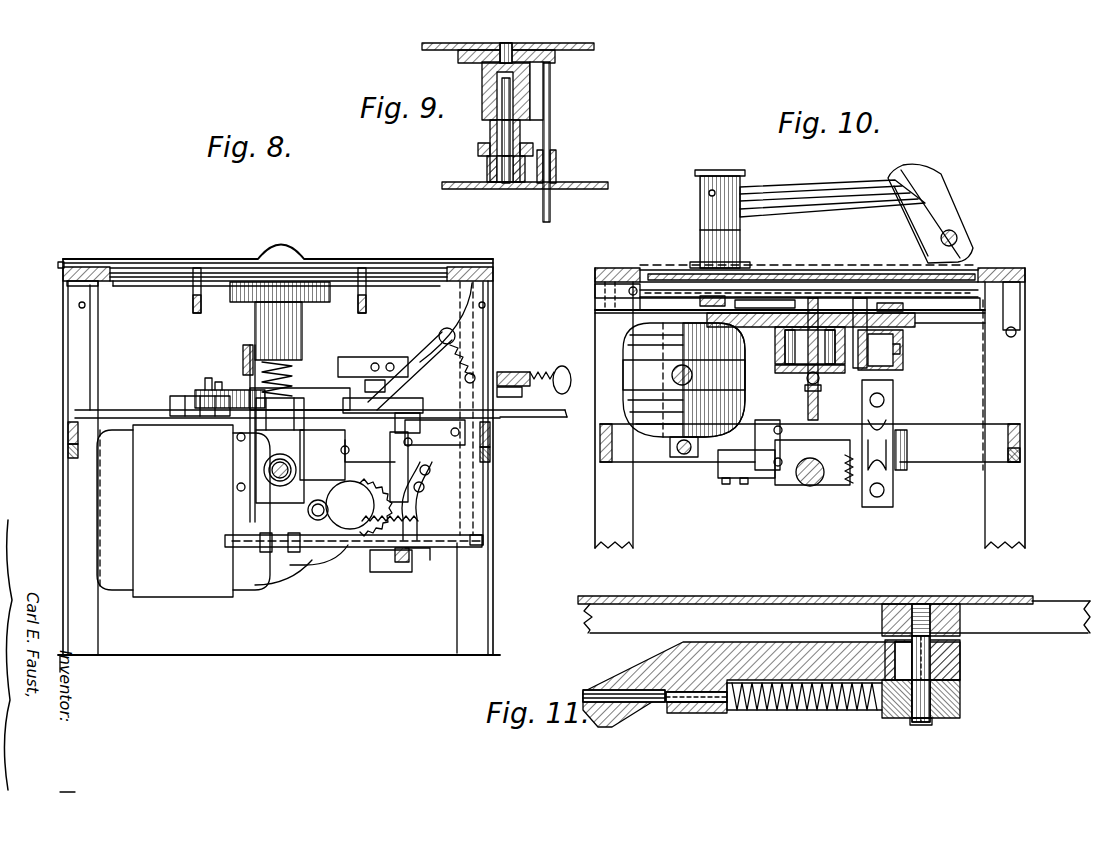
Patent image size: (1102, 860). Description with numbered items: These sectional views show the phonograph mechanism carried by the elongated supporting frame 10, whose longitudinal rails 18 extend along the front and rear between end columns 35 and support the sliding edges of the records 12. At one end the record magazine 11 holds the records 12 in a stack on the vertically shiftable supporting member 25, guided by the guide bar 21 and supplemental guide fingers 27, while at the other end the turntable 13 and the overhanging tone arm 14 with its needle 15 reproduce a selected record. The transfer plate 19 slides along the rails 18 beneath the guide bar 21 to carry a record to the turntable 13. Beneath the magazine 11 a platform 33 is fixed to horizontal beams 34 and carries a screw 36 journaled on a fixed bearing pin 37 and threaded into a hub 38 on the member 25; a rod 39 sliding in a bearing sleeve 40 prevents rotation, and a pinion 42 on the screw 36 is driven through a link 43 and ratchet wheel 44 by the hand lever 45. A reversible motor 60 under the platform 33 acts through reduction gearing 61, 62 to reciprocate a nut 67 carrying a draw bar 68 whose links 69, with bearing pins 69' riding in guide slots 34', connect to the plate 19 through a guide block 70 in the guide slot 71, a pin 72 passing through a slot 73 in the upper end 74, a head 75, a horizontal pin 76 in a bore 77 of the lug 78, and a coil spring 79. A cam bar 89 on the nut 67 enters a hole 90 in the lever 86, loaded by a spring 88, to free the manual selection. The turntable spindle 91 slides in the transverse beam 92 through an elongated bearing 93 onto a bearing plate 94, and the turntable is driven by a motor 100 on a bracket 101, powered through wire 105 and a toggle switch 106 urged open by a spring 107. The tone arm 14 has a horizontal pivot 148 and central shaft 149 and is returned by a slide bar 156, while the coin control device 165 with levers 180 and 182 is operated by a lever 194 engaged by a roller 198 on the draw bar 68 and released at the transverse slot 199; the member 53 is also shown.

In FIG. 8, the supporting frame 10 is at (55, 368).
In FIG. 10, the supporting frame 10 is at (1040, 385).
In FIG. 8, the record magazine 11 is at (397, 258).
In FIG. 8, the records 12 is at (137, 275).
In FIG. 10, the turntable 13 is at (946, 285).
In FIG. 10, the tone arm 14 is at (838, 186).
In FIG. 10, the needle 15 is at (946, 263).
In FIG. 8, the longitudinal rails 18 is at (80, 268).
In FIG. 10, the longitudinal rails 18 is at (620, 268).
In FIG. 11, the longitudinal rails 18 is at (1057, 592).
In FIG. 11, the transfer plate 19 is at (798, 596).
In FIG. 8, the guide bar 21 is at (200, 262).
In FIG. 8, the record-supporting member 25 is at (135, 288).
In FIG. 9, the record-supporting member 25 is at (455, 43).
In FIG. 8, the guide fingers 27 is at (198, 298).
In FIG. 8, the platform 33 is at (133, 410).
In FIG. 9, the platform 33 is at (594, 182).
In FIG. 8, the horizontal beams 34 is at (273, 434).
In FIG. 10, the horizontal beams 34 is at (815, 442).
In FIG. 10, the guide slots 34' is at (1039, 458).
In FIG. 8, the end columns 35 is at (69, 326).
In FIG. 10, the end columns 35 is at (622, 508).
In FIG. 9, the screw 36 is at (490, 130).
In FIG. 9, the bearing pin 37 is at (505, 106).
In FIG. 9, the hub 38 is at (490, 88).
In FIG. 9, the rod 39 is at (550, 98).
In FIG. 9, the bearing sleeve 40 is at (556, 160).
In FIG. 9, the pinion 42 is at (488, 176).
In FIG. 8, the link 43 is at (205, 388).
In FIG. 8, the ratchet wheel 44 is at (190, 400).
In FIG. 8, the hand lever 45 is at (530, 410).
In FIG. 9, the nut 53 is at (478, 150).
In FIG. 8, the reversible motor 60 is at (204, 511).
In FIG. 8, the reduction gearing 61 is at (330, 555).
In FIG. 8, the reduction gearing 62 is at (362, 506).
In FIG. 8, the nut 67 is at (300, 492).
In FIG. 8, the draw bar 68 is at (362, 548).
In FIG. 8, the links 69 is at (275, 497).
In FIG. 11, the links 69 is at (614, 737).
In FIG. 8, the bearing pins 69' is at (271, 459).
In FIG. 11, the guide block 70 is at (946, 616).
In FIG. 11, the guide slot 71 is at (850, 606).
In FIG. 11, the pin 72 is at (958, 650).
In FIG. 11, the slot 73 is at (905, 668).
In FIG. 11, the upper end 74 is at (850, 690).
In FIG. 11, the head 75 is at (946, 706).
In FIG. 11, the horizontal pin 76 is at (720, 704).
In FIG. 11, the bore 77 is at (640, 700).
In FIG. 11, the lug 78 is at (705, 714).
In FIG. 11, the coil spring 79 is at (792, 708).
In FIG. 8, the lever 86 is at (386, 452).
In FIG. 8, the spring 88 is at (396, 438).
In FIG. 8, the cam bar 89 is at (348, 462).
In FIG. 8, the hole 90 is at (362, 437).
In FIG. 10, the spindle 91 is at (845, 333).
In FIG. 10, the transverse beam 92 is at (948, 318).
In FIG. 10, the bearing 93 is at (790, 331).
In FIG. 10, the bearing plate 94 is at (782, 368).
In FIG. 10, the motor 100 is at (684, 380).
In FIG. 10, the bracket 101 is at (672, 458).
In FIG. 10, the wire 105 is at (680, 300).
In FIG. 10, the toggle switch 106 is at (745, 470).
In FIG. 10, the spring 107 is at (760, 470).
In FIG. 10, the horizontal pivot 148 is at (708, 194).
In FIG. 10, the central shaft 149 is at (745, 263).
In FIG. 10, the slide bar 156 is at (628, 288).
In FIG. 8, the coin control device 165 is at (486, 371).
In FIG. 8, the lever 180 is at (420, 362).
In FIG. 8, the lever 182 is at (420, 506).
In FIG. 8, the lever 194 is at (400, 572).
In FIG. 8, the roller 198 is at (432, 560).
In FIG. 8, the transverse slot 199 is at (410, 564).